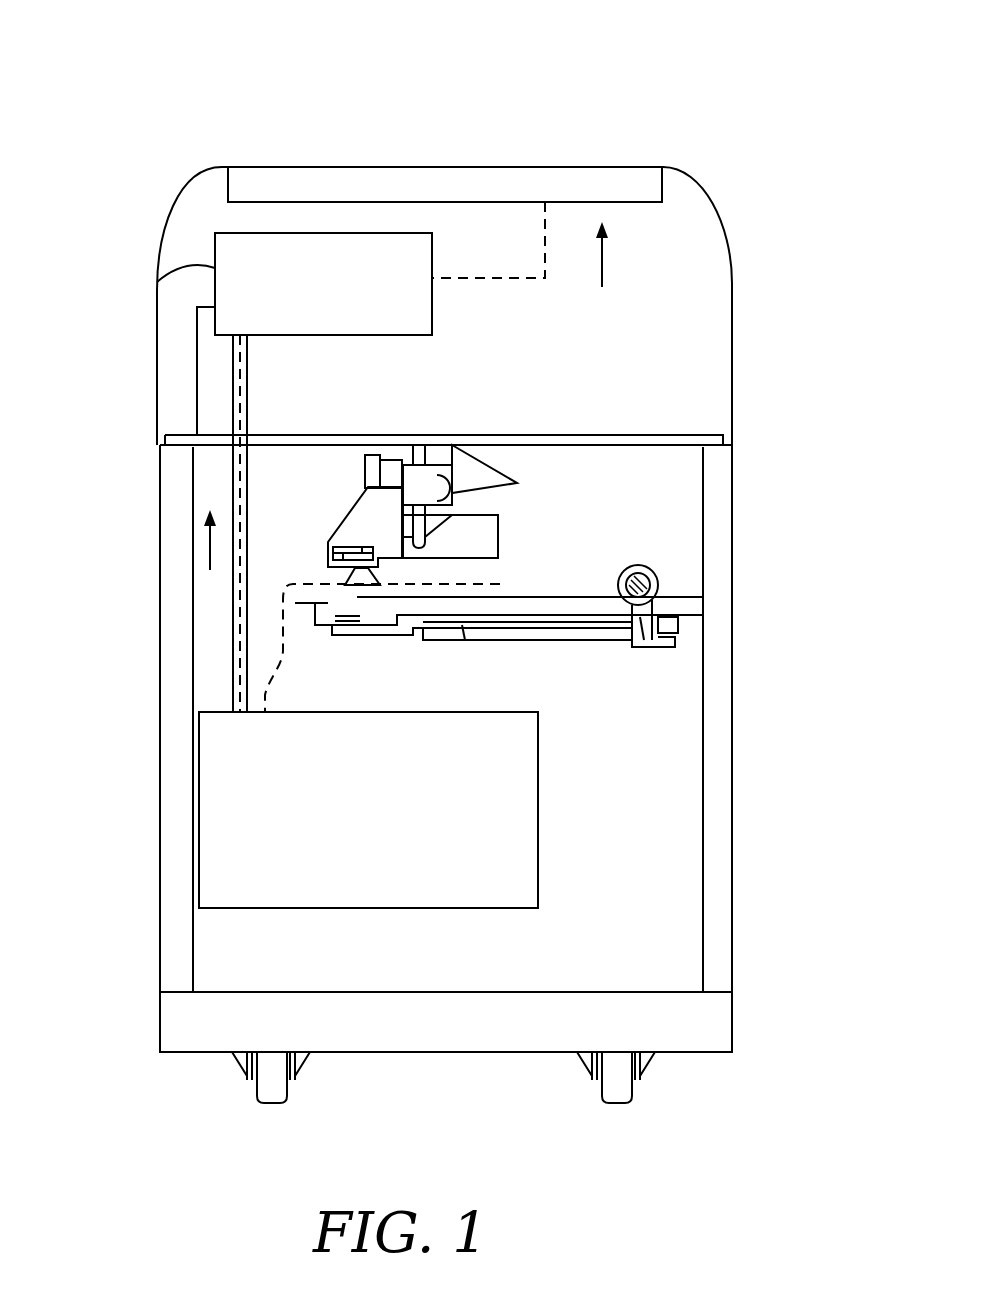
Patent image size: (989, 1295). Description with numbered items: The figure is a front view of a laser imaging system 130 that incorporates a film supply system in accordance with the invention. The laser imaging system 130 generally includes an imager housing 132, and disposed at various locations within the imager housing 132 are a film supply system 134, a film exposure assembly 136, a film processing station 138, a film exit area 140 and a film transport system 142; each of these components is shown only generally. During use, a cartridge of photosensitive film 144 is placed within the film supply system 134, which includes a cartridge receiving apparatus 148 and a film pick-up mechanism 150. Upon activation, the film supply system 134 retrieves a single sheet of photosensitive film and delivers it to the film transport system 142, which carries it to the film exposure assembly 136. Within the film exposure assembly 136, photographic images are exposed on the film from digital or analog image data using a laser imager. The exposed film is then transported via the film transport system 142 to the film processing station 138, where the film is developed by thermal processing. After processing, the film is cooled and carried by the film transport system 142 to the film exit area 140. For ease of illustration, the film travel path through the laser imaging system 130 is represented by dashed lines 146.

The laser imaging system 130 is at (156, 141).
The imager housing 132 is at (724, 713).
The film supply system 134 is at (530, 530).
The film exposure assembly 136 is at (538, 815).
The film processing station 138 is at (158, 284).
The film exit area 140 is at (549, 155).
The film transport system 142 is at (224, 623).
The cartridge of photosensitive film 144 is at (468, 640).
The dashed lines 146 is at (500, 278).
The cartridge receiving apparatus 148 is at (682, 595).
The film pick-up mechanism 150 is at (336, 512).